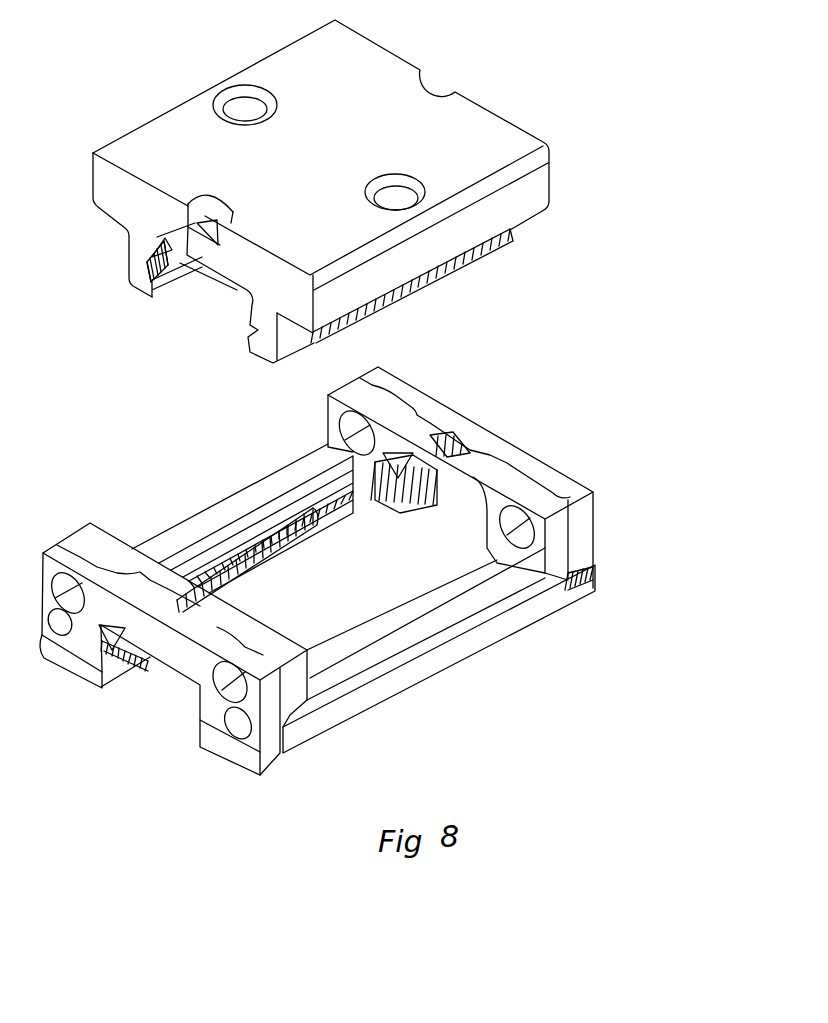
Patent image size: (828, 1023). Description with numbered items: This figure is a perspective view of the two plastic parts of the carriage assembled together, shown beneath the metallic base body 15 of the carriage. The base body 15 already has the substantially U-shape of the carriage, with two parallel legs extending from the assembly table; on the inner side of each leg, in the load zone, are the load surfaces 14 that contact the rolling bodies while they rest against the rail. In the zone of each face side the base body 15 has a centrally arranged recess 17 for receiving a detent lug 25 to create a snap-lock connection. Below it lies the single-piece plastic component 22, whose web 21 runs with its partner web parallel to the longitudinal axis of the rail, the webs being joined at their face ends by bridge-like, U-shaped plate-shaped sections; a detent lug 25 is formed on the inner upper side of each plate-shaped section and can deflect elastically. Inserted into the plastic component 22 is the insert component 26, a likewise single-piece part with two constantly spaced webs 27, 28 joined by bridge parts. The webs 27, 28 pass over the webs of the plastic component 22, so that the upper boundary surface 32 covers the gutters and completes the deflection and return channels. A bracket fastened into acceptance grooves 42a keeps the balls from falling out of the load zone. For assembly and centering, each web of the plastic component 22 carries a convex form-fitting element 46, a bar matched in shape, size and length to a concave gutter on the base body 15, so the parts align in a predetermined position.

The base body 15 is at (553, 118).
The recess 17 is at (195, 223).
The load surfaces 14 is at (184, 255).
The web 21 is at (343, 503).
The single-piece plastic component 22 is at (500, 440).
The detent lug 25 is at (453, 433).
The insert component 26 is at (100, 540).
The web 27 is at (213, 520).
The web 28 is at (500, 590).
The upper boundary surface 32 is at (465, 438).
The acceptance grooves 42a is at (72, 675).
The form-fitting element 46 is at (263, 550).